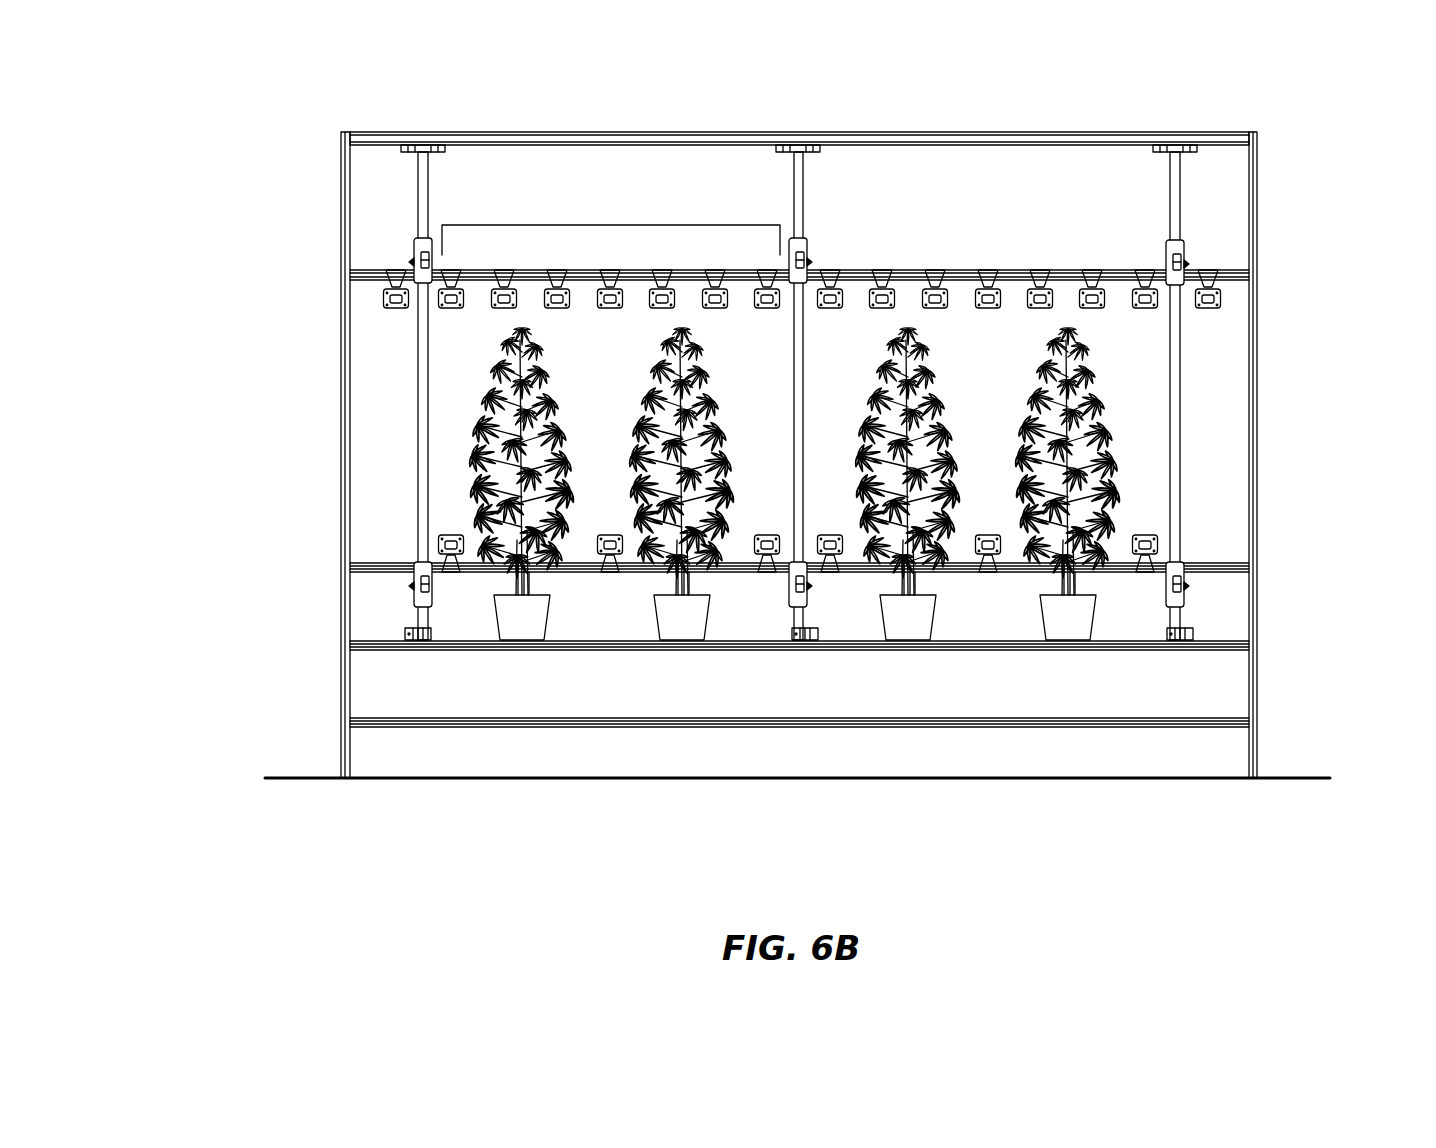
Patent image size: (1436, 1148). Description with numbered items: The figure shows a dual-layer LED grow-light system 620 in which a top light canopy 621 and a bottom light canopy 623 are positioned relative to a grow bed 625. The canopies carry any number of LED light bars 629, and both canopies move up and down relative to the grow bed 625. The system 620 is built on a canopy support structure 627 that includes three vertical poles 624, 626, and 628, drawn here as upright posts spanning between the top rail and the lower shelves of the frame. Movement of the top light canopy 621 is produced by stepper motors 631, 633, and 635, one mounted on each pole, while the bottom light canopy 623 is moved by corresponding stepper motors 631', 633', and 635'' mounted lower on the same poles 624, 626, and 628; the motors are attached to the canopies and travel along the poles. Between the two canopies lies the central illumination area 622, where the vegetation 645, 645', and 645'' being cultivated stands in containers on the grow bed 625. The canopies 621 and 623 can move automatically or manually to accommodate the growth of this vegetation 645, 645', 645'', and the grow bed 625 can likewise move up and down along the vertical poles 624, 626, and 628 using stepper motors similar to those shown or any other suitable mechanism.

The LED grow-light system 620 is at (325, 108).
The top light canopy 621 is at (330, 312).
The central illumination area 622 is at (330, 520).
The bottom light canopy 623 is at (330, 572).
The vertical pole 624 is at (420, 178).
The grow bed 625 is at (330, 652).
The vertical pole 626 is at (800, 172).
The canopy support structure 627 is at (1258, 372).
The vertical pole 628 is at (1172, 188).
The LED light bars 629 is at (617, 222).
The stepper motor 631 is at (350, 243).
The stepper motor 633 is at (862, 225).
The stepper motor 635 is at (1264, 229).
The stepper motor 631' is at (497, 699).
The stepper motor 633' is at (902, 699).
The stepper motor 635'' is at (1272, 604).
The vegetation 645 is at (634, 636).
The vegetation 645' is at (954, 636).
The vegetation 645'' is at (1111, 636).